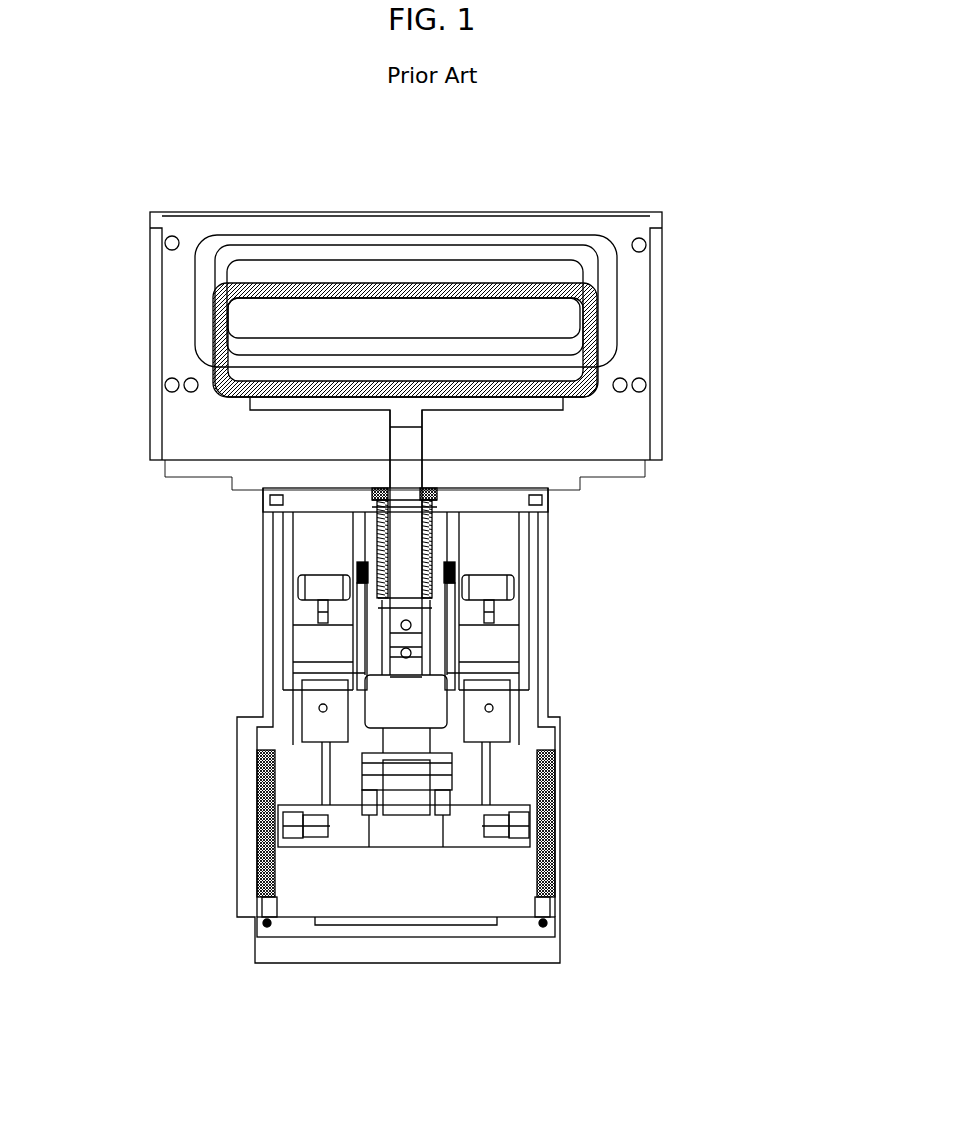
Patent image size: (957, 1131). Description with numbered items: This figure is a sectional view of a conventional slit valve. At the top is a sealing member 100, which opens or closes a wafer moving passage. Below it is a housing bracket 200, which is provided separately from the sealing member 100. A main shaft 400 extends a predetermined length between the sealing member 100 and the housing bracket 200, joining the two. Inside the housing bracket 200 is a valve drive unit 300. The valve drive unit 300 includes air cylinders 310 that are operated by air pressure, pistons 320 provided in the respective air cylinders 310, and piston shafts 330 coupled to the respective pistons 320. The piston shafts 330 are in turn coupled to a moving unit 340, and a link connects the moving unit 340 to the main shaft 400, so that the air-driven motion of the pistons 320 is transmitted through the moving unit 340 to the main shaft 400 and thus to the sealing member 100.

The sealing member 100 is at (600, 357).
The housing bracket 200 is at (250, 747).
The valve drive unit 300 is at (537, 684).
The air cylinders 310 is at (500, 552).
The pistons 320 is at (497, 598).
The piston shafts 330 is at (497, 685).
The moving unit 340 is at (475, 832).
The main shaft 400 is at (402, 557).